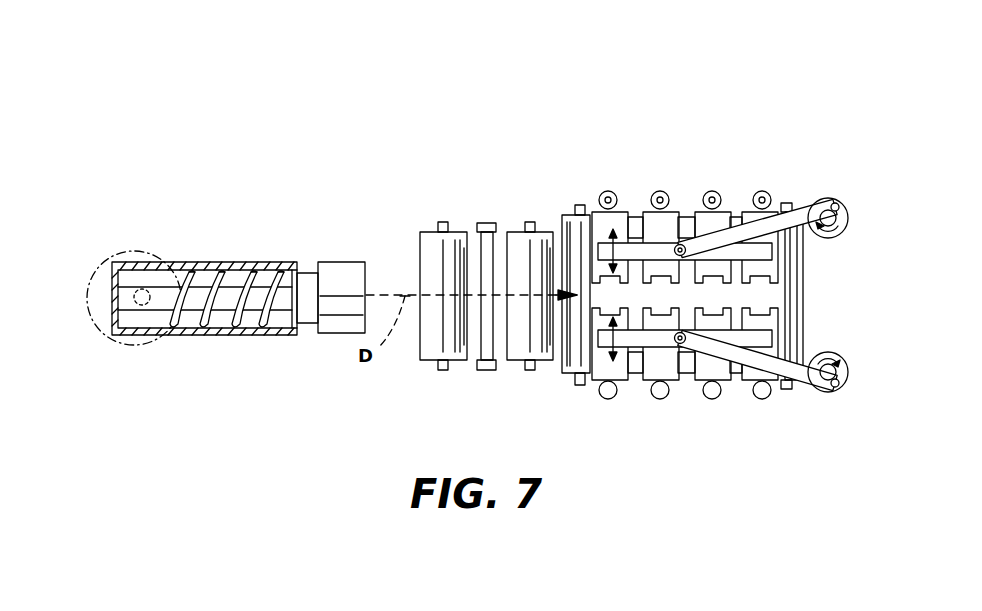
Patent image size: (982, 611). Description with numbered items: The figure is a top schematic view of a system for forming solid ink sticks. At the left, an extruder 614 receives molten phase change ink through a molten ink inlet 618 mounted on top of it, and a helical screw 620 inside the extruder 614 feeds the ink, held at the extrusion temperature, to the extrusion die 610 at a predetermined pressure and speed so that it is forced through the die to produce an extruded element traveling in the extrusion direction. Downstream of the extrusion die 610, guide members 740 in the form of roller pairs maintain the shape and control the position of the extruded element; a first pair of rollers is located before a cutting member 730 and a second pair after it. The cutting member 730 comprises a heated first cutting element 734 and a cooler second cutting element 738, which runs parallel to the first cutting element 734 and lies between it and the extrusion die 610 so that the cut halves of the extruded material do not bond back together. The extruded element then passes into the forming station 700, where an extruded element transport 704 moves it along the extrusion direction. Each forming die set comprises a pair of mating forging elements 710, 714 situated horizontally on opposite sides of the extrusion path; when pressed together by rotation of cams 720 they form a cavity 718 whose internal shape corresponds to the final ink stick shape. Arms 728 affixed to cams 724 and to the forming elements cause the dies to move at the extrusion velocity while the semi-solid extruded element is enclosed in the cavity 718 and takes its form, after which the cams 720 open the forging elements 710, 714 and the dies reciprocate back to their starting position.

The forming station 700 is at (787, 130).
The molten ink inlet 618 is at (176, 260).
The extruder 614 is at (240, 262).
The screw 620 is at (210, 326).
The extrusion die 610 is at (325, 262).
The cutting member 730 is at (476, 211).
The first cutting element 734 is at (493, 243).
The second cutting element 738 is at (480, 352).
The guide members 740 is at (432, 355).
The forging element 714 is at (590, 360).
The forging element 710 is at (810, 255).
The cavity 718 is at (687, 296).
The cams 720 is at (604, 192).
The arms 728 is at (803, 212).
The cams 724 is at (848, 206).
The extruded element transport 704 is at (805, 270).